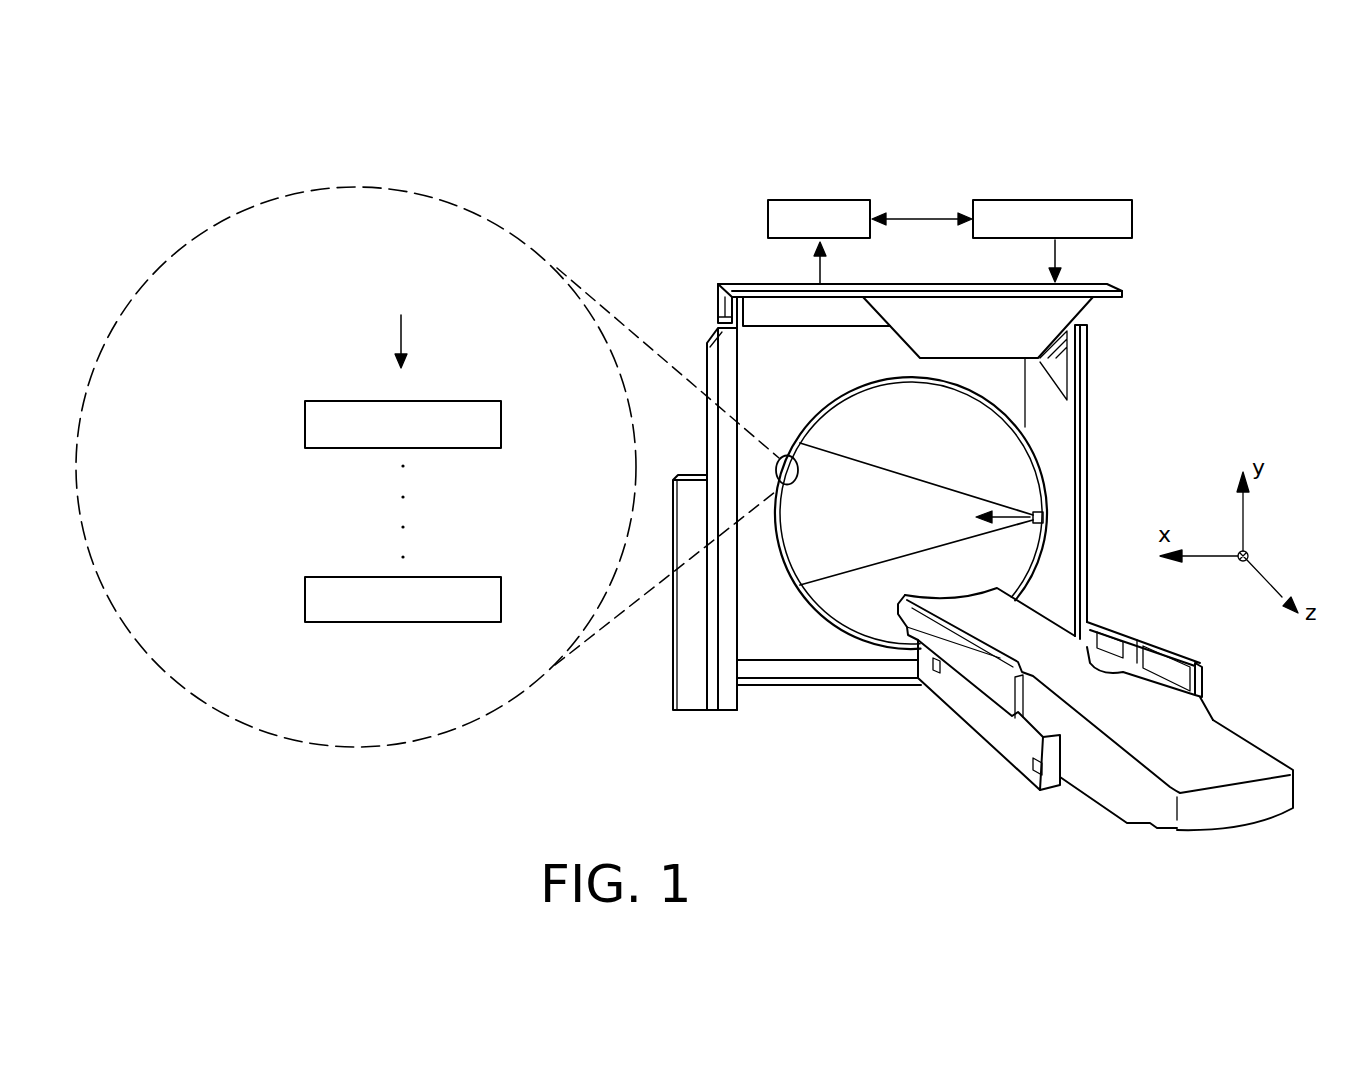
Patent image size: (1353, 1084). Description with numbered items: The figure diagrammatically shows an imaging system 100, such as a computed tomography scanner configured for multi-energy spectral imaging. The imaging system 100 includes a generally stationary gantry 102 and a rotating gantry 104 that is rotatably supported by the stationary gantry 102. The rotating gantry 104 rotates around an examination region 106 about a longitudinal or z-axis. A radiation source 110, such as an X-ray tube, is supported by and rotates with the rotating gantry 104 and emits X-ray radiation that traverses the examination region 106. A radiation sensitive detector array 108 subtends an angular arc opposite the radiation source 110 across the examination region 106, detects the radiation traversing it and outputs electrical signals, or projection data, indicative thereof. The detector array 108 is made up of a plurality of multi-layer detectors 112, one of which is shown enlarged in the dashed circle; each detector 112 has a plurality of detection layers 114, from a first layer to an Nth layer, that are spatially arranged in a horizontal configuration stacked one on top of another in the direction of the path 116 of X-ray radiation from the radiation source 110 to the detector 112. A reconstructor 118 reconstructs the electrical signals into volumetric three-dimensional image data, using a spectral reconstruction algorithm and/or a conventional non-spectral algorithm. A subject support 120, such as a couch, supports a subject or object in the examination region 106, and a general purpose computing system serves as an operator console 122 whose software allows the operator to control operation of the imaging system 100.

The imaging system 100 is at (1245, 168).
The stationary gantry 102 is at (720, 357).
The rotating gantry 104 is at (1017, 430).
The examination region 106 is at (929, 448).
The radiation sensitive detector array 108 is at (783, 508).
The radiation source 110 is at (1048, 517).
The multi-layer detector 112 is at (274, 363).
The layers 114 is at (305, 600).
The path of X-ray radiation 116 is at (1001, 500).
The reconstructor 118 is at (1053, 198).
The subject support 120 is at (1226, 743).
The operator console 122 is at (817, 198).